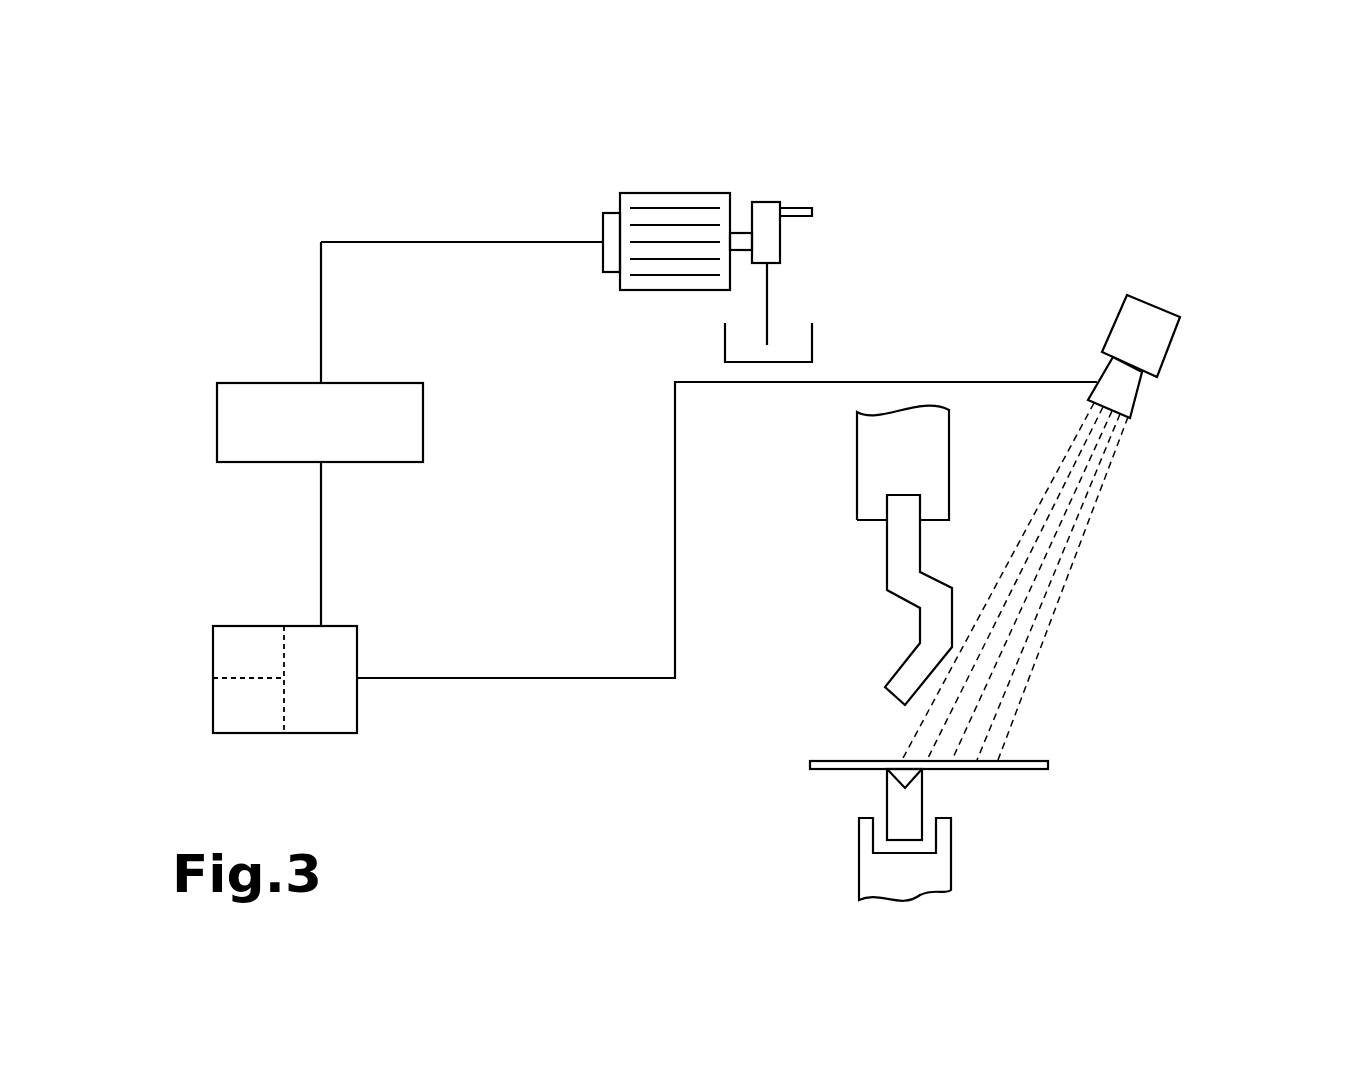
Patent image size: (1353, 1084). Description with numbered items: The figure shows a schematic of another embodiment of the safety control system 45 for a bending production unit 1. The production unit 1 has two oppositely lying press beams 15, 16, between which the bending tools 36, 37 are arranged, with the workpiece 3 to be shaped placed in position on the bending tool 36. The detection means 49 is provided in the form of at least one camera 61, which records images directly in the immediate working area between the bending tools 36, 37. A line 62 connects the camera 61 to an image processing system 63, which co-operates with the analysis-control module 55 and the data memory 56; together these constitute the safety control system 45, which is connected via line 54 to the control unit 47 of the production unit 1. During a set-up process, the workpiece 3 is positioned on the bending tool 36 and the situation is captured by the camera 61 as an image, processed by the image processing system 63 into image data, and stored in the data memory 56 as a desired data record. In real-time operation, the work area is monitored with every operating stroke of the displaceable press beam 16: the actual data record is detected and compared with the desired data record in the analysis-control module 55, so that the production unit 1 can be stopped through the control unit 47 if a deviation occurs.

The production unit 1 is at (1051, 542).
The workpiece 3 is at (1013, 765).
The press beam 15 is at (930, 877).
The press beam 16 is at (880, 460).
The bending tool 36 is at (895, 799).
The bending tool 37 is at (910, 597).
The safety control system 45 is at (295, 629).
The control unit 47 is at (230, 435).
The detection means 49 is at (1116, 471).
The line 54 is at (318, 554).
The analysis-control module 55 is at (308, 662).
The data memory 56 is at (240, 705).
The camera 61 is at (1143, 345).
The line 62 is at (534, 675).
The image processing system 63 is at (235, 652).